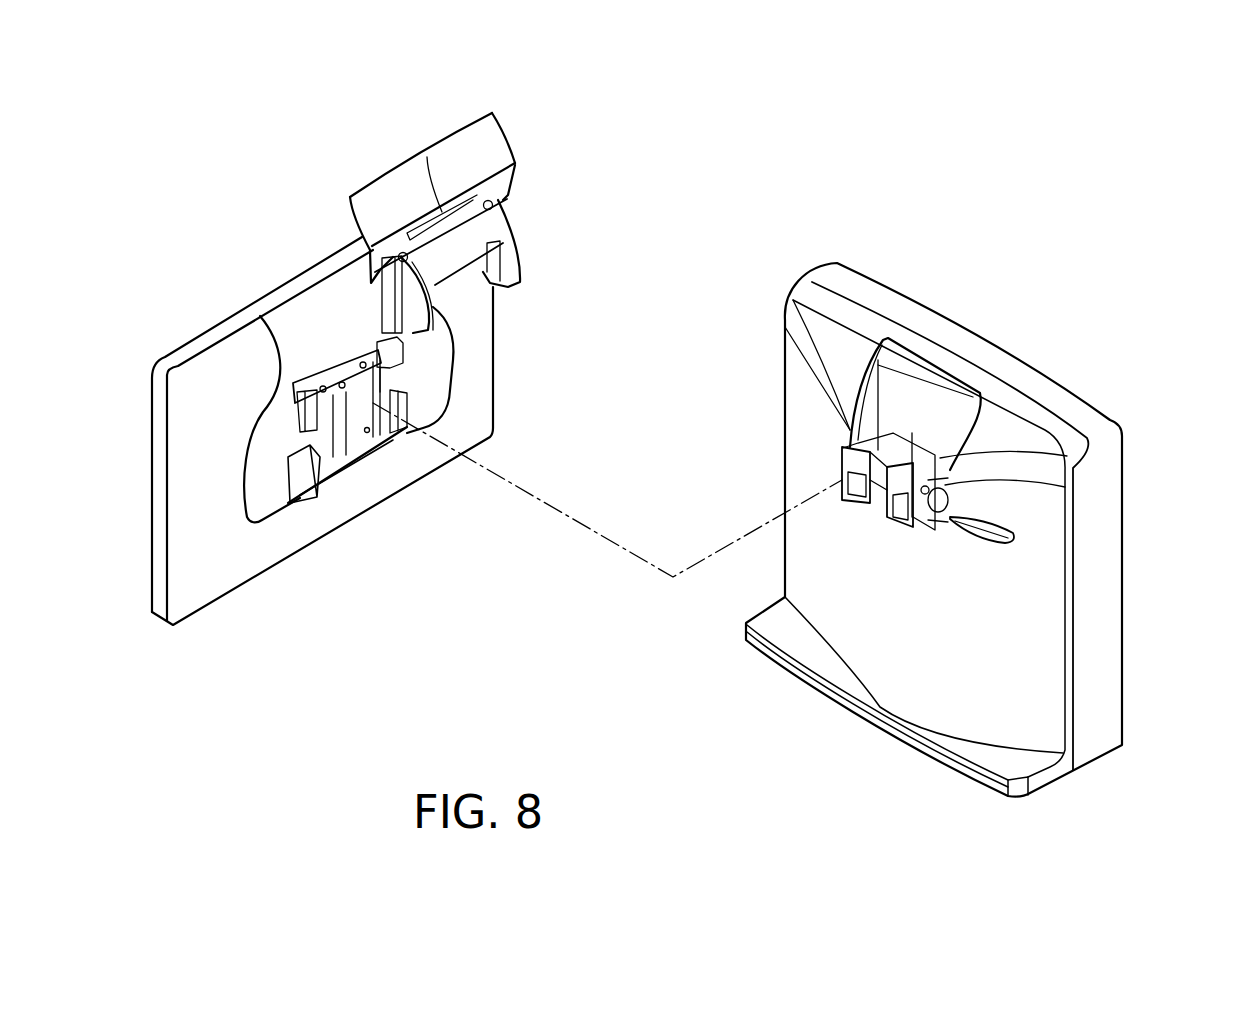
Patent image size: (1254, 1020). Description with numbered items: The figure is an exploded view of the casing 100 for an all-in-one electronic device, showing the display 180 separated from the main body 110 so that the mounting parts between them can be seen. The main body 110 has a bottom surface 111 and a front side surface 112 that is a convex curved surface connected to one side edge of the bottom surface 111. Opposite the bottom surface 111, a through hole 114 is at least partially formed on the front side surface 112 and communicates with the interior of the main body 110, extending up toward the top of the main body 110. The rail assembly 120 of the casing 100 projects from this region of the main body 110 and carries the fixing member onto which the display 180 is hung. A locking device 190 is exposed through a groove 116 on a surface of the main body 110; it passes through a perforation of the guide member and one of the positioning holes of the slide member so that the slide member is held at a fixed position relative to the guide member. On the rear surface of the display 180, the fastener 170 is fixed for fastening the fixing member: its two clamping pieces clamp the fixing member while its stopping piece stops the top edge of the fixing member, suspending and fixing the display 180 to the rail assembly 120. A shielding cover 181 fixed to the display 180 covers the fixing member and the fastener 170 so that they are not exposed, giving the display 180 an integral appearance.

The casing 100 is at (946, 453).
The main body 110 is at (982, 556).
The bottom surface 111 is at (1083, 768).
The front side surface 112 is at (1017, 647).
The through hole 114 is at (878, 393).
The groove 116 is at (993, 530).
The rail assembly 120 is at (939, 461).
The fastener 170 is at (357, 413).
The display 180 is at (286, 293).
The shielding cover 181 is at (405, 195).
The locking device 190 is at (943, 537).